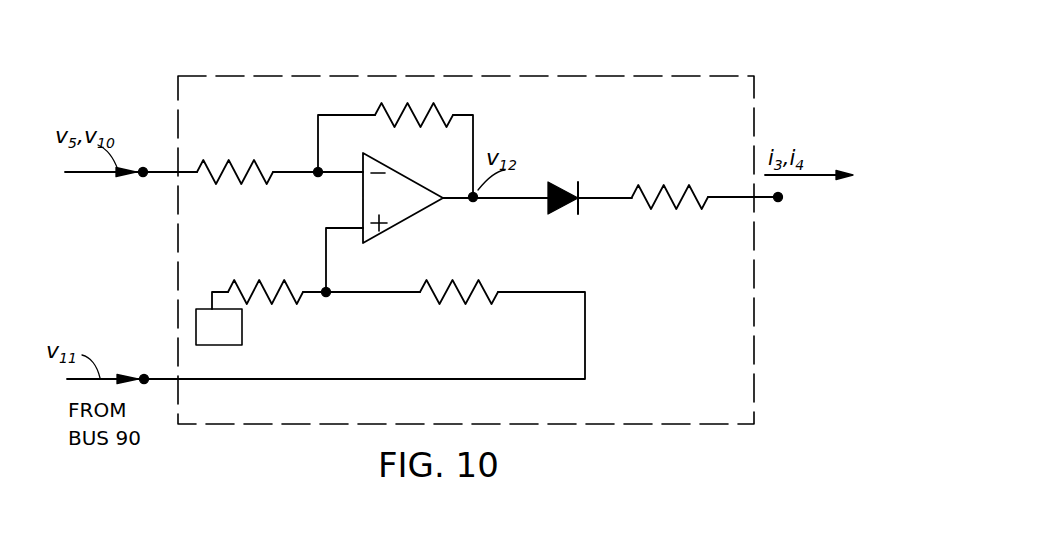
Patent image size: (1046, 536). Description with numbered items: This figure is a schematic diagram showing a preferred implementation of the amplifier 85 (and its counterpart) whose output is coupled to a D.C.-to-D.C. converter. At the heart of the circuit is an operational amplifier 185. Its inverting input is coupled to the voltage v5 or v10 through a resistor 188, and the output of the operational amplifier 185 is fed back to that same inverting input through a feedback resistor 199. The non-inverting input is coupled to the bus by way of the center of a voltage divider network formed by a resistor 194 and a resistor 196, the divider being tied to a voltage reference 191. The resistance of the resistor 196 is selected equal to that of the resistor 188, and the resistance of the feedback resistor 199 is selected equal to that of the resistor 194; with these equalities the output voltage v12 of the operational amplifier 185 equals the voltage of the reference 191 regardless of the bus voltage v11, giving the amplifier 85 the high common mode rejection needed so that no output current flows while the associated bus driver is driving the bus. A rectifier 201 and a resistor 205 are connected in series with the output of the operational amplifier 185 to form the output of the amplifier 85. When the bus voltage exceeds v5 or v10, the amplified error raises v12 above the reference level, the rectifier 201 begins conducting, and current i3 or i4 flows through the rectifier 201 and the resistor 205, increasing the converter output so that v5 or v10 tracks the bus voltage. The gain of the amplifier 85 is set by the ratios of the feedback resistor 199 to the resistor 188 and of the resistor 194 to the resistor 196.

The amplifier 85 is at (671, 75).
The resistor 188 is at (208, 160).
The feedback resistor 199 is at (440, 110).
The operational amplifier 185 is at (405, 210).
The rectifier 201 is at (564, 183).
The resistor 205 is at (678, 185).
The voltage reference 191 is at (243, 343).
The resistor 194 is at (250, 282).
The resistor 196 is at (445, 279).